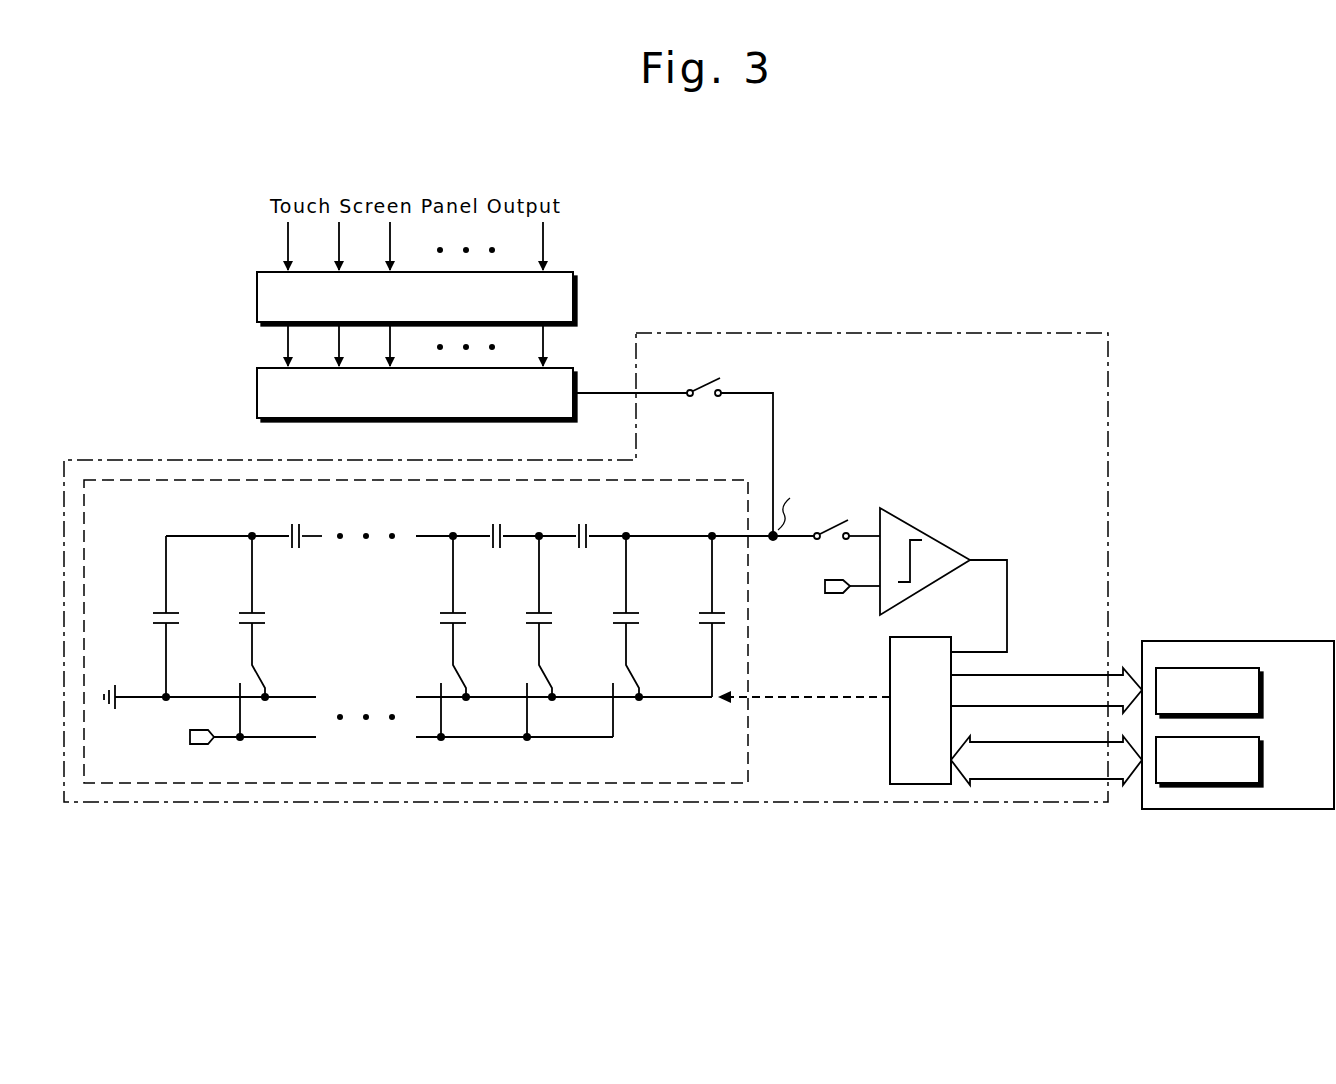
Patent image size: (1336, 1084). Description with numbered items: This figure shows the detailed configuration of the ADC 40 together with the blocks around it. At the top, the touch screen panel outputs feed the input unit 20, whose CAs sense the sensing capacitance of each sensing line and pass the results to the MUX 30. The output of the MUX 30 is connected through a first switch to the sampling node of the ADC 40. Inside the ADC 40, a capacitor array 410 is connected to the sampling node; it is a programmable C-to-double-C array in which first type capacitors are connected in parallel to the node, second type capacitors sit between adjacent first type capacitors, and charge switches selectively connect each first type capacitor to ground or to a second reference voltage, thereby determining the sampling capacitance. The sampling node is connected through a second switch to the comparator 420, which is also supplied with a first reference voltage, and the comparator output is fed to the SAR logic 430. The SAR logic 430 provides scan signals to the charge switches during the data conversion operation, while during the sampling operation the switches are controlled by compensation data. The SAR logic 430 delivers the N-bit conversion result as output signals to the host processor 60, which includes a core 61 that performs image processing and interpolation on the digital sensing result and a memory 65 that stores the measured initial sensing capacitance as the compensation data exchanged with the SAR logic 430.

The input unit 20 is at (257, 295).
The MUX 30 is at (257, 393).
The ADC 40 is at (1028, 333).
The capacitor array 410 is at (680, 480).
The comparator 420 is at (916, 520).
The SAR logic 430 is at (890, 758).
The host processor 60 is at (1238, 695).
The core 61 is at (1262, 690).
The memory 65 is at (1262, 762).